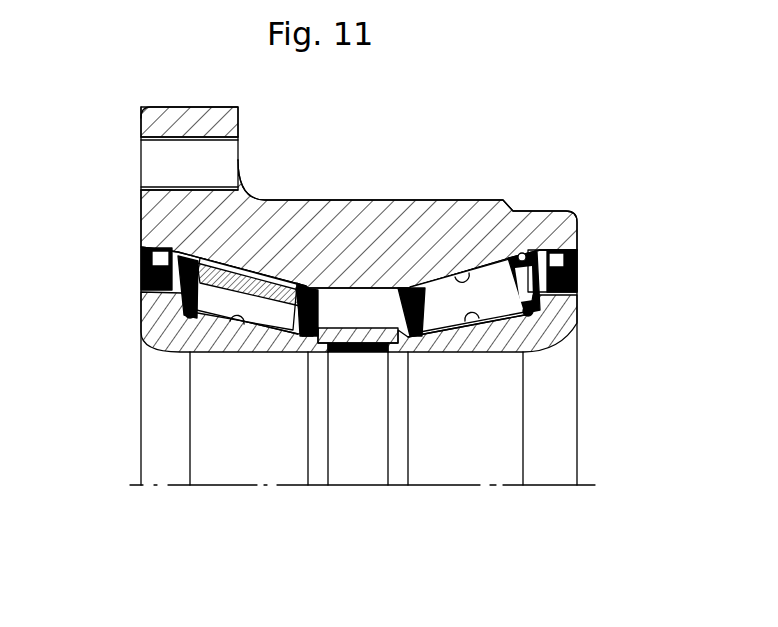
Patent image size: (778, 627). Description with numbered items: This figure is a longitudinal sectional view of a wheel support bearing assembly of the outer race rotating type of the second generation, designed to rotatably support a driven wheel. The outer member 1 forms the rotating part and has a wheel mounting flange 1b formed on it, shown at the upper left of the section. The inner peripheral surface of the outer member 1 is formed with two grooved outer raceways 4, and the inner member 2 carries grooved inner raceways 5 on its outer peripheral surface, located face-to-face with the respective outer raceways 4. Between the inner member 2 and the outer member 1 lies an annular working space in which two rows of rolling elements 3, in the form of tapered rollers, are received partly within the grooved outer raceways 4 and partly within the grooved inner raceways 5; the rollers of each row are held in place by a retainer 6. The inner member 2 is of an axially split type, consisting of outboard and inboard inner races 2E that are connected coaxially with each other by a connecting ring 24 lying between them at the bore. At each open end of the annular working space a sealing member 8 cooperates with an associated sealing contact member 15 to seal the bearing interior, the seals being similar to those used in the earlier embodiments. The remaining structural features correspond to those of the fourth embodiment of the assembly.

The outer member 1 is at (392, 201).
The wheel mounting flange 1b is at (208, 107).
The inner member 2 is at (440, 563).
The inner races 2E is at (273, 341).
The connecting ring 24 is at (365, 353).
The rolling elements 3 is at (222, 302).
The grooved outer raceways 4 is at (283, 277).
The grooved inner raceways 5 is at (244, 342).
The retainer 6 is at (247, 268).
The sealing member 8 is at (140, 251).
The sealing contact member 15 is at (140, 276).